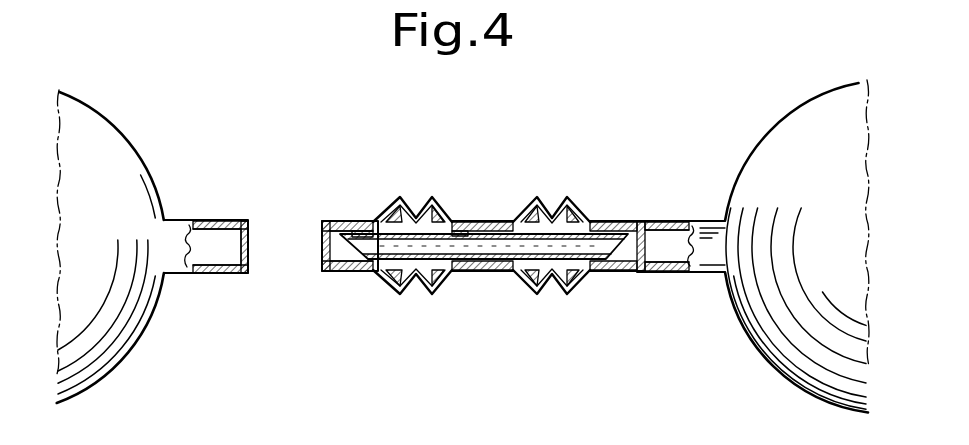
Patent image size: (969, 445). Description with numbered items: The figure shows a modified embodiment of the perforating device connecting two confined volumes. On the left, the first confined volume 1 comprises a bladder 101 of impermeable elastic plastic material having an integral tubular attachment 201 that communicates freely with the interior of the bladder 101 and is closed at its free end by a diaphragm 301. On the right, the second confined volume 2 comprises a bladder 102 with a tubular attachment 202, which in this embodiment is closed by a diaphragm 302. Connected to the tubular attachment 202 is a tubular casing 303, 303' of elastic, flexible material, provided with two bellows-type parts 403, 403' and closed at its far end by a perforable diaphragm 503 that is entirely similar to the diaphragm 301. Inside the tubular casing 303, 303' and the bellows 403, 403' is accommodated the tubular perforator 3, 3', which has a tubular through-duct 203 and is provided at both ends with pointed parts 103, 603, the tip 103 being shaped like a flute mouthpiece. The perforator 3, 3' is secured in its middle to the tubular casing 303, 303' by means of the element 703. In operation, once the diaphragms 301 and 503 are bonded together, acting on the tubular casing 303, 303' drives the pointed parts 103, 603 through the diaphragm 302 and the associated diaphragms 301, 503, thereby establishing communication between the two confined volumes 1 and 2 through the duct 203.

The first confined volume 1 is at (132, 134).
The bladder 101 is at (84, 115).
The tubular attachment 201 is at (200, 219).
The diaphragm 301 is at (251, 275).
The second confined volume 2 is at (764, 129).
The bladder 102 is at (754, 348).
The tubular attachment 202 is at (672, 222).
The diaphragm 302 is at (660, 270).
The perforating element 3 is at (412, 303).
The perforating element 3' is at (551, 305).
The tip 103 is at (356, 224).
The tubular through-duct 203 is at (502, 250).
The tubular casing 303 is at (341, 289).
The tubular casing 303' is at (610, 299).
The bellows-type part 403 is at (412, 185).
The bellows-type part 403' is at (551, 185).
The perforable diaphragm 503 is at (322, 232).
The pointed part 603 is at (608, 226).
The element 703 is at (474, 222).